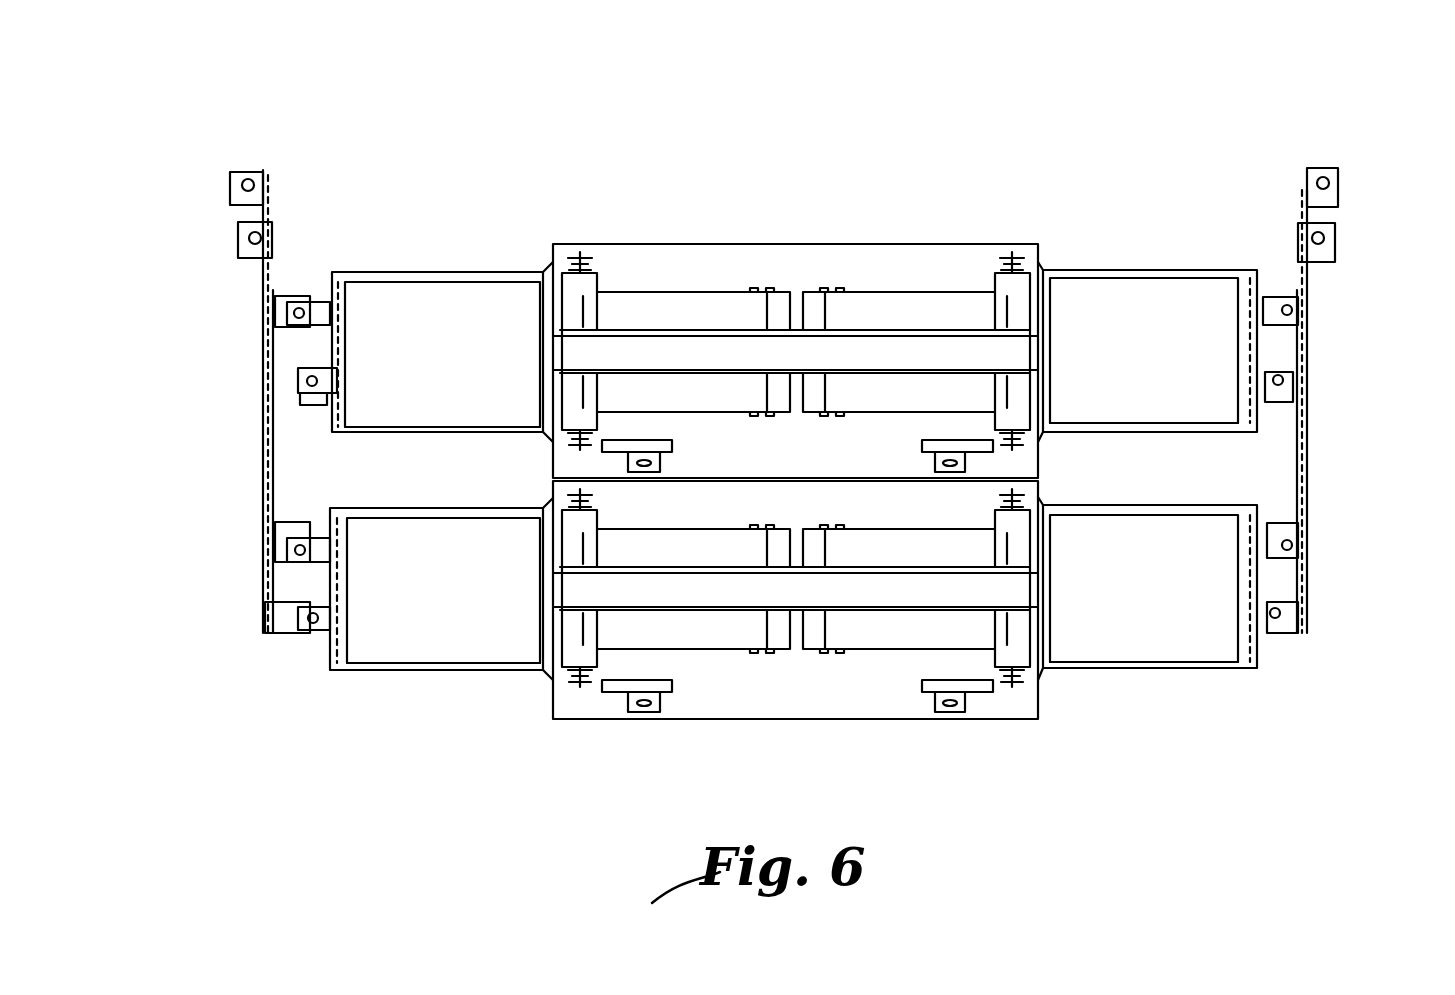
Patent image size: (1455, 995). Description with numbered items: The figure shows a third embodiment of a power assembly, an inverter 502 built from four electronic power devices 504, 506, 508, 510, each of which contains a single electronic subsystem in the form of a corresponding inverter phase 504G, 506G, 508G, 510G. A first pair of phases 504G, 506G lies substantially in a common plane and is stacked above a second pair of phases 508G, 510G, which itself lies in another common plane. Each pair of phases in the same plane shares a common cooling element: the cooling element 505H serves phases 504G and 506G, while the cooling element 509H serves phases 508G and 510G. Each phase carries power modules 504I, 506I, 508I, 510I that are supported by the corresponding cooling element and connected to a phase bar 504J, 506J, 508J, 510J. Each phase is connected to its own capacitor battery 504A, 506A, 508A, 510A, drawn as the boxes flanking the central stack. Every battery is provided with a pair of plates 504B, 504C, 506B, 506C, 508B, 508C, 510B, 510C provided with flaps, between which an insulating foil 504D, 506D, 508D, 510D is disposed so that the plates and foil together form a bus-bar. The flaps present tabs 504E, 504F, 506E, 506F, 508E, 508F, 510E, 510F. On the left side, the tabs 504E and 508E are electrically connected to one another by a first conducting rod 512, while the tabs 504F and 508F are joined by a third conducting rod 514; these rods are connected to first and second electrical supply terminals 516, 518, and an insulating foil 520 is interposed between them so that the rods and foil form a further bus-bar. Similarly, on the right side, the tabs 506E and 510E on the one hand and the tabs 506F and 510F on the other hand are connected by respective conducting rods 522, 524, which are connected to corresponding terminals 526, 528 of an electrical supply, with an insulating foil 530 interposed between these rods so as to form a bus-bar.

The inverter 502 is at (770, 157).
The electronic power device 504 is at (480, 180).
The capacitor battery 504A is at (440, 300).
The plate 504B is at (492, 270).
The plate 504C is at (404, 432).
The insulating foil 504D is at (340, 348).
The tab 504E is at (320, 398).
The tab 504F is at (287, 311).
The inverter phase 504G is at (676, 278).
The power module 504I is at (640, 388).
The phase bar 504J is at (672, 446).
The cooling element 505H is at (795, 410).
The electronic power device 506 is at (1154, 174).
The capacitor battery 506A is at (1162, 300).
The plate 506B is at (1180, 270).
The plate 506C is at (1124, 432).
The insulating foil 506D is at (1240, 352).
The tab 506E is at (1293, 390).
The tab 506F is at (1298, 318).
The inverter phase 506G is at (940, 278).
The power module 506I is at (950, 386).
The phase bar 506J is at (930, 456).
The electronic power device 508 is at (459, 737).
The capacitor battery 508A is at (400, 640).
The plate 508B is at (395, 510).
The plate 508C is at (425, 676).
The insulating foil 508D is at (345, 580).
The tab 508E is at (290, 617).
The tab 508F is at (288, 547).
The inverter phase 508G is at (716, 664).
The power module 508I is at (630, 625).
The phase bar 508J is at (620, 690).
The cooling element 509H is at (855, 597).
The electronic power device 510 is at (1102, 744).
The capacitor battery 510A is at (1147, 647).
The plate 510B is at (1106, 490).
The plate 510C is at (1102, 680).
The insulating foil 510D is at (1240, 582).
The tab 510E is at (1298, 620).
The tab 510F is at (1298, 540).
The inverter phase 510G is at (905, 661).
The power module 510I is at (935, 630).
The phase bar 510J is at (975, 688).
The first conducting rod 512 is at (266, 580).
The third conducting rod 514 is at (296, 347).
The first electrical supply terminal 516 is at (240, 252).
The second electrical supply terminal 518 is at (238, 196).
The insulating foil 520 is at (270, 468).
The conducting rod 522 is at (1308, 582).
The conducting rod 524 is at (1300, 492).
The electrical supply terminal 526 is at (1337, 183).
The electrical supply terminal 528 is at (1333, 240).
The insulating foil 530 is at (1308, 445).